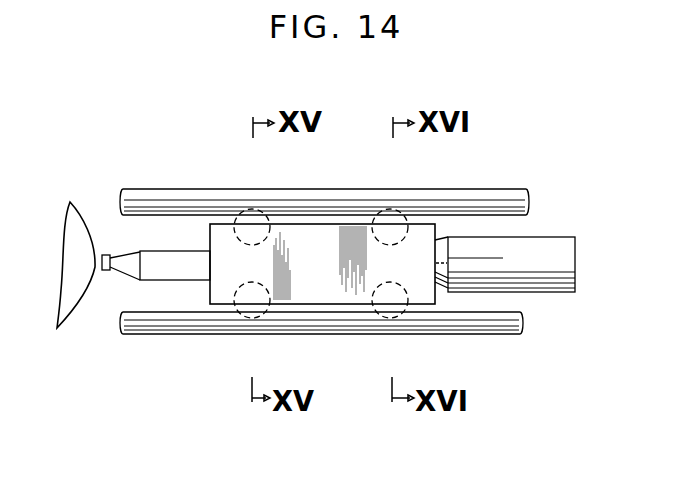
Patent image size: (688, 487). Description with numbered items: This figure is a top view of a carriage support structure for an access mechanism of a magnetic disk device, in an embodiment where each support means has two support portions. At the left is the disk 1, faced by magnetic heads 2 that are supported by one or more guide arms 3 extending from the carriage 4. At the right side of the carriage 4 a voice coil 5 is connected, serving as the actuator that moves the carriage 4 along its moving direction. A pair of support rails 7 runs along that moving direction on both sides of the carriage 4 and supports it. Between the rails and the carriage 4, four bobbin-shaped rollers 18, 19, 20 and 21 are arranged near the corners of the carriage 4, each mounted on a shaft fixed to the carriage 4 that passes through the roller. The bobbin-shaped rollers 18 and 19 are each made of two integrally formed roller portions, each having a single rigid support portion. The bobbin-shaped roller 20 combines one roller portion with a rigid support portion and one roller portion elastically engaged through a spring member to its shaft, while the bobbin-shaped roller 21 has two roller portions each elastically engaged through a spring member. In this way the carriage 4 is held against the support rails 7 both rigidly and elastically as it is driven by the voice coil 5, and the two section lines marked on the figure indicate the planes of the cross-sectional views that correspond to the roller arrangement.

The disk 1 is at (70, 202).
The magnetic heads 2 is at (104, 272).
The guide arms 3 is at (160, 281).
The carriage 4 is at (338, 294).
The voice coil 5 is at (552, 294).
The support rails 7 is at (508, 202).
The bobbin-shaped roller 18 is at (243, 217).
The bobbin-shaped roller 19 is at (385, 215).
The bobbin-shaped roller 20 is at (247, 307).
The bobbin-shaped roller 21 is at (397, 310).